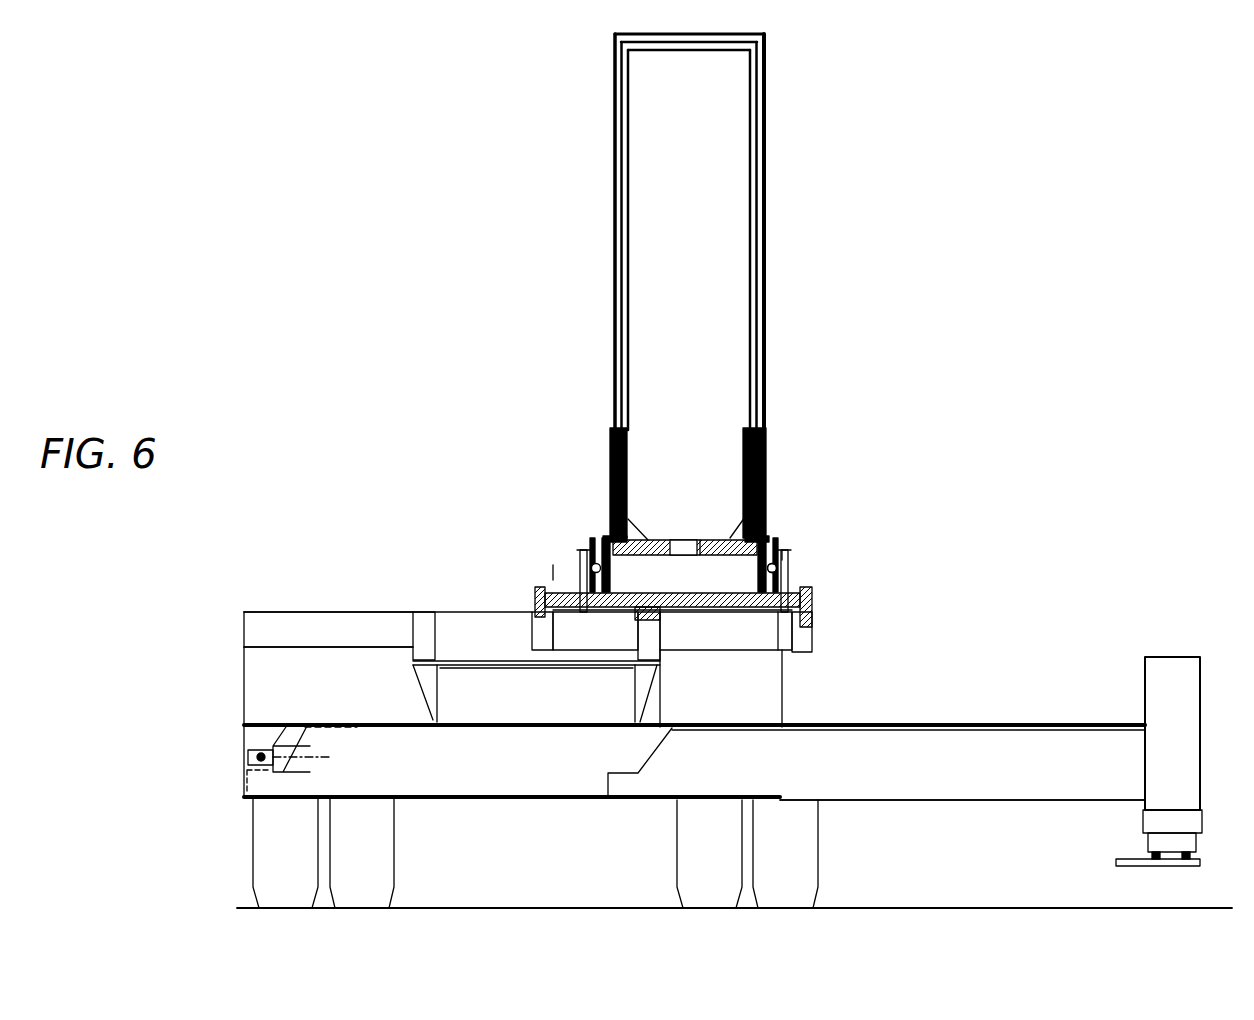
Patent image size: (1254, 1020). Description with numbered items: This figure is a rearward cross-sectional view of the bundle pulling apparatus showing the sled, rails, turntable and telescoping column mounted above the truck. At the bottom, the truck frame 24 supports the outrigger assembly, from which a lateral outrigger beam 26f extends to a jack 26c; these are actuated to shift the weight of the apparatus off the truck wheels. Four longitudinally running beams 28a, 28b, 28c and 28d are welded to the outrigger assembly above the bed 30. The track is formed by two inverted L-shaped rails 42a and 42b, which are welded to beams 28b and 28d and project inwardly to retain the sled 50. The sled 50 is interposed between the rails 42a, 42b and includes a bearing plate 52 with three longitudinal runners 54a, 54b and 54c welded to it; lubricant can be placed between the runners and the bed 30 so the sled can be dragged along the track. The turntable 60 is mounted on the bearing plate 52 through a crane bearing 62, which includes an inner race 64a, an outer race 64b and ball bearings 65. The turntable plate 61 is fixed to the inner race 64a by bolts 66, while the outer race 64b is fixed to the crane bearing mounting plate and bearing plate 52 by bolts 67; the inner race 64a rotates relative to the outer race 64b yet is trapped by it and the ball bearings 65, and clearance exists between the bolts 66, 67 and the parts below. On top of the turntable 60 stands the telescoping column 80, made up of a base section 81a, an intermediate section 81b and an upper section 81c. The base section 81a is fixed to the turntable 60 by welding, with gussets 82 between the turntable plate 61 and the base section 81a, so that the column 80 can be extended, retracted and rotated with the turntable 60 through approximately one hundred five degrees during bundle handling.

The truck frame 24 is at (288, 672).
The bed 30 is at (305, 613).
The jack 26c is at (1122, 838).
The lateral outrigger beam 26f is at (895, 730).
The longitudinally running beam 28a is at (416, 612).
The longitudinally running beam 28b is at (540, 618).
The longitudinally running beam 28c is at (664, 658).
The longitudinally running beam 28d is at (812, 648).
The inverted L-shaped rail 42a is at (537, 588).
The inverted L-shaped rail 42b is at (815, 593).
The sled 50 is at (719, 584).
The bearing plate 52 is at (648, 594).
The longitudinal runner 54a is at (556, 617).
The longitudinal runner 54b is at (660, 628).
The longitudinal runner 54c is at (782, 618).
The turntable 60 is at (669, 545).
The turntable plate 61 is at (786, 535).
The crane bearing 62 is at (552, 570).
The inner race 64a is at (712, 545).
The outer race 64b is at (790, 552).
The ball bearings 65 is at (790, 572).
The bolts 66 is at (598, 537).
The bolts 67 is at (583, 550).
The telescoping column 80 is at (738, 288).
The base section 81a is at (743, 445).
The intermediate section 81b is at (767, 246).
The upper section 81c is at (770, 92).
The gussets 82 is at (655, 523).